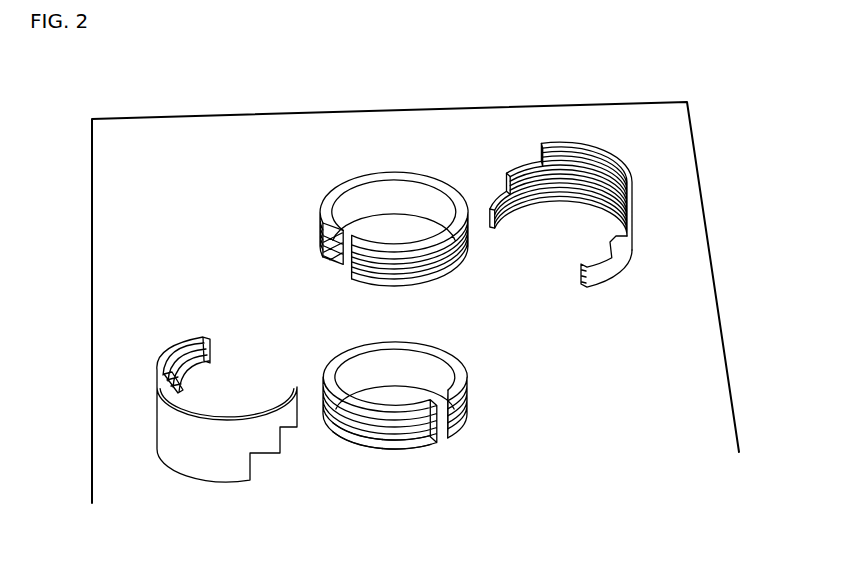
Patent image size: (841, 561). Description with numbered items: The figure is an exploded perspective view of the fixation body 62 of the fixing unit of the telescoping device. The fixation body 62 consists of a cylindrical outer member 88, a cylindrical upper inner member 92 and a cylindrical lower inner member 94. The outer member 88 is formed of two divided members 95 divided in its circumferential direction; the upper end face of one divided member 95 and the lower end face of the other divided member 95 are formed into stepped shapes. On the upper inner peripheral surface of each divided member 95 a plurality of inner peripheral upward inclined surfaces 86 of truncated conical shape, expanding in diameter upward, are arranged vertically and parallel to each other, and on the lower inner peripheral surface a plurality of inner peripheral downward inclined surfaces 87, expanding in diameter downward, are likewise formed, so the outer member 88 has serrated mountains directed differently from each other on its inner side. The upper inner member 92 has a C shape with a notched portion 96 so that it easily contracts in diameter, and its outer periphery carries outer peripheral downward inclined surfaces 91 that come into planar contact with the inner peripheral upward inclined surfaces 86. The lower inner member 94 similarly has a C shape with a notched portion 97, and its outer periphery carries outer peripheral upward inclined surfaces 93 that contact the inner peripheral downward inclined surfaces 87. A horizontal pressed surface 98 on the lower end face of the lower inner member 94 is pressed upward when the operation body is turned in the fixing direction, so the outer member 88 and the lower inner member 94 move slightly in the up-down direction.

The fixation body 62 is at (485, 107).
The upper inner member 92 is at (391, 168).
The outer peripheral downward inclined surfaces 91 is at (325, 248).
The notched portion 96 is at (347, 270).
The outer member 88 is at (602, 153).
The inner peripheral upward inclined surfaces 86 is at (556, 146).
The inner peripheral downward inclined surfaces 87 is at (528, 198).
The divided members 95 is at (635, 241).
The outer peripheral upward inclined surfaces 93 is at (372, 445).
The notched portion 97 is at (442, 435).
The pressed surface 98 is at (340, 440).
The lower inner member 94 is at (420, 448).